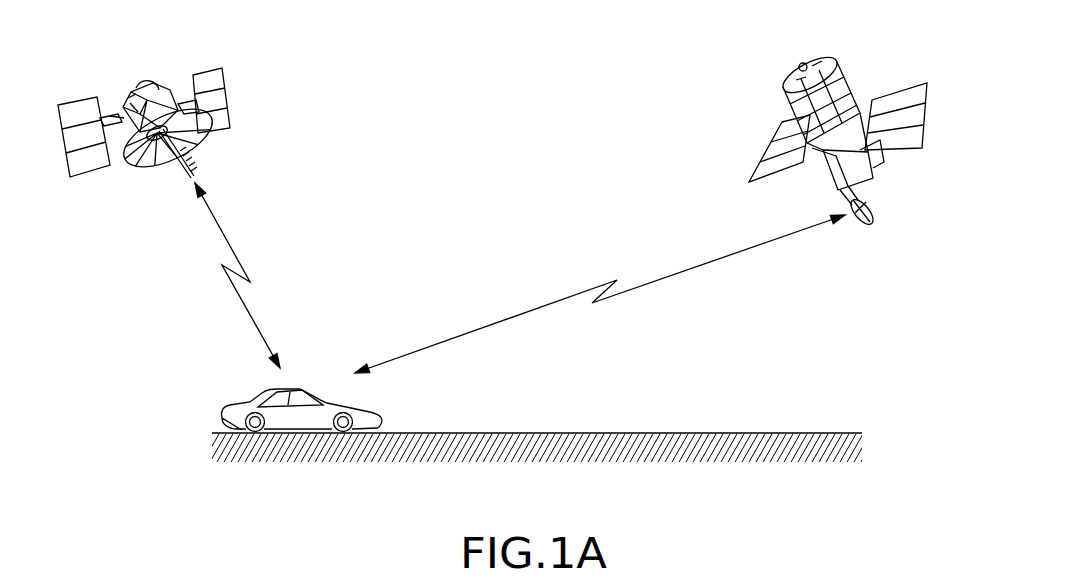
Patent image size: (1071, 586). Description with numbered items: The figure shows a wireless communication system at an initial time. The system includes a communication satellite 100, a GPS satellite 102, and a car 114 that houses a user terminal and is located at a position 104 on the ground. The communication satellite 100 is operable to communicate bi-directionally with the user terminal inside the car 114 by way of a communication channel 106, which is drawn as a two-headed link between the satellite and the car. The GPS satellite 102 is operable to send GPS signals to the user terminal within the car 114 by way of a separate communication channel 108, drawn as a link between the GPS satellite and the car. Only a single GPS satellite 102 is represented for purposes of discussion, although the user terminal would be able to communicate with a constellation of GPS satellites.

The communication satellite 100 is at (254, 84).
The GPS satellite 102 is at (768, 94).
The position 104 is at (301, 444).
The communication channel 106 is at (208, 259).
The communication channel 108 is at (650, 302).
The car 114 is at (308, 372).